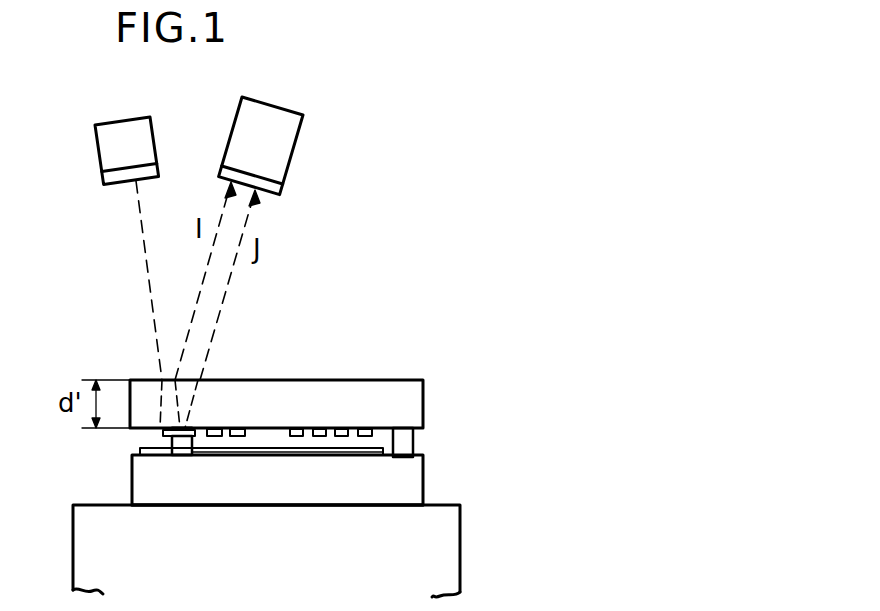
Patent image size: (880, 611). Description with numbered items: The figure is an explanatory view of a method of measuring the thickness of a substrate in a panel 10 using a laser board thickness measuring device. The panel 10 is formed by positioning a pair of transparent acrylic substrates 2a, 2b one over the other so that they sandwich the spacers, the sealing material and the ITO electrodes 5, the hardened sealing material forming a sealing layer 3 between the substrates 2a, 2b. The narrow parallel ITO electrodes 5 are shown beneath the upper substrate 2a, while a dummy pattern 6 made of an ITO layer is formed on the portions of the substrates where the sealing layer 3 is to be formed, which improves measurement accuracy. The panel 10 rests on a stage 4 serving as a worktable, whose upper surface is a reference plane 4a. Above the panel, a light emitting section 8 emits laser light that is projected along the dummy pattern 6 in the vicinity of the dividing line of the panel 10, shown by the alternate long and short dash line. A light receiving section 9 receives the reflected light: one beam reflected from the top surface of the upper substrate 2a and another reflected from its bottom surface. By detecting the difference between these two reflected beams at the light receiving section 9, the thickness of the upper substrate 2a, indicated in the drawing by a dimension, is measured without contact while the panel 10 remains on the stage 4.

The upper transparent substrate 2a is at (393, 388).
The lower transparent substrate 2b is at (178, 492).
The sealing layer 3 is at (415, 443).
The stage 4 is at (450, 553).
The reference plane 4a is at (447, 505).
The ITO electrodes 5 is at (340, 428).
The dummy pattern 6 is at (190, 428).
The light emitting section 8 is at (122, 138).
The light receiving section 9 is at (270, 115).
The panel 10 is at (118, 482).